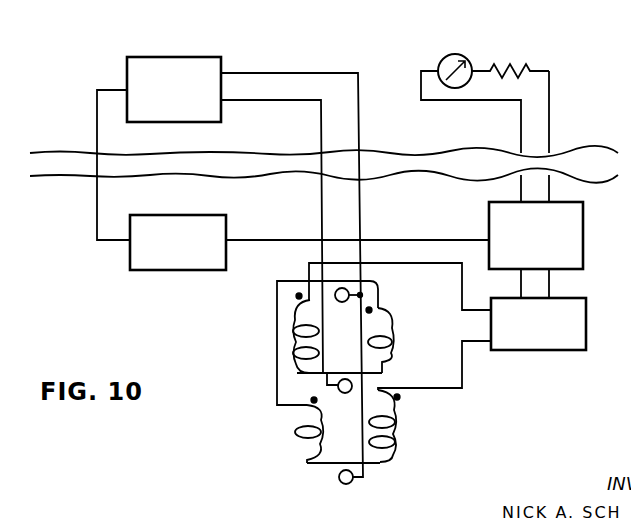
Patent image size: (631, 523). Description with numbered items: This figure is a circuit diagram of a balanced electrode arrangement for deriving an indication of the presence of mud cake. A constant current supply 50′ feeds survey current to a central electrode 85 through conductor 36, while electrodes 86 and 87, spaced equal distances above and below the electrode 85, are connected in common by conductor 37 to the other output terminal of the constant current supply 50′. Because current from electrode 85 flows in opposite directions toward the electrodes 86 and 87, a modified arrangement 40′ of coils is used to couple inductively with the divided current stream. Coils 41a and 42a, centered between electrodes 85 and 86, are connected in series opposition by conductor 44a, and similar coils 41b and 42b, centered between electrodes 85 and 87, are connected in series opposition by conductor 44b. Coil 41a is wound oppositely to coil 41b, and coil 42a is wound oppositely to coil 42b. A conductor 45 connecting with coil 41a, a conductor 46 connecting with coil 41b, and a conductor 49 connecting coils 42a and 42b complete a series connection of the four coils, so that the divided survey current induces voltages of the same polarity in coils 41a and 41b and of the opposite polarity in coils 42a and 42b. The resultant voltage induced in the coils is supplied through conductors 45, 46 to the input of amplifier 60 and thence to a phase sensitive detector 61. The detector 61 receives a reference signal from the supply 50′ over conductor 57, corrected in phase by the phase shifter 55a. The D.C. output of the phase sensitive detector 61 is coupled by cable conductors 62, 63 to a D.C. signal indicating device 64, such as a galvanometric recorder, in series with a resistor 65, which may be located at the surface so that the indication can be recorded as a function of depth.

The constant current supply 50′ is at (178, 57).
The conductor 57 is at (97, 124).
The phase shifter 55a is at (192, 215).
The conductor 36 is at (321, 197).
The conductor 37 is at (361, 196).
The phase sensitive detector 61 is at (583, 216).
The amplifier 60 is at (586, 310).
The indicating device 64 is at (463, 57).
The resistor 65 is at (511, 67).
The cable conductor 62 is at (485, 100).
The cable conductor 63 is at (551, 113).
The conductor 49 is at (277, 293).
The modified arrangement of coils 40′ is at (286, 320).
The conductor 45 is at (460, 281).
The conductor 46 is at (461, 360).
The coil 41a is at (297, 348).
The coil 41b is at (396, 432).
The coil 42a is at (392, 335).
The coil 42b is at (294, 432).
The conductor 44a is at (378, 376).
The conductor 44b is at (327, 465).
The central electrode 85 is at (342, 394).
The electrode 86 is at (342, 303).
The electrode 87 is at (345, 486).